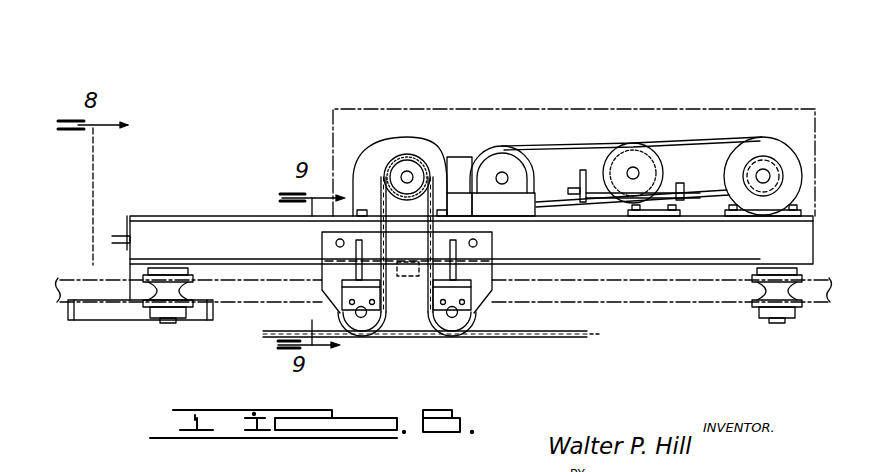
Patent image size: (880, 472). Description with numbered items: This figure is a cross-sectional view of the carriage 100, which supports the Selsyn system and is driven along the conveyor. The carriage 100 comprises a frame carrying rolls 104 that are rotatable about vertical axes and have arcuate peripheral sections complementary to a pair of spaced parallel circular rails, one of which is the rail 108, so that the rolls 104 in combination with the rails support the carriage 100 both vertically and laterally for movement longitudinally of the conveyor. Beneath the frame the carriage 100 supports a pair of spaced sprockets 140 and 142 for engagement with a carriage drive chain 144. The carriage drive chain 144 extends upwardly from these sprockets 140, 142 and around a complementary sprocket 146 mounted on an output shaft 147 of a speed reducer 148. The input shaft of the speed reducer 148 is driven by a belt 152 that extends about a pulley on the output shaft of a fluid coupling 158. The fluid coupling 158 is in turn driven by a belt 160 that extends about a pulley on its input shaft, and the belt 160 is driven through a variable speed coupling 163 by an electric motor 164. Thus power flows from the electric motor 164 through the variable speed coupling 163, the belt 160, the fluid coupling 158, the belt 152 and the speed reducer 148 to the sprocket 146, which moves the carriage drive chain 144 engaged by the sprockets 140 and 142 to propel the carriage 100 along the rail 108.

The carriage 100 is at (718, 63).
The rolls 104 is at (150, 312).
The rail 108 is at (258, 302).
The sprocket 140 is at (358, 338).
The sprocket 142 is at (465, 331).
The carriage drive chain 144 is at (437, 260).
The complementary sprocket 146 is at (411, 172).
The output shaft 147 is at (404, 176).
The speed reducer 148 is at (408, 135).
The belt 152 is at (471, 156).
The fluid coupling 158 is at (507, 143).
The belt 160 is at (571, 144).
The variable speed coupling 163 is at (592, 172).
The electric motor 164 is at (773, 135).